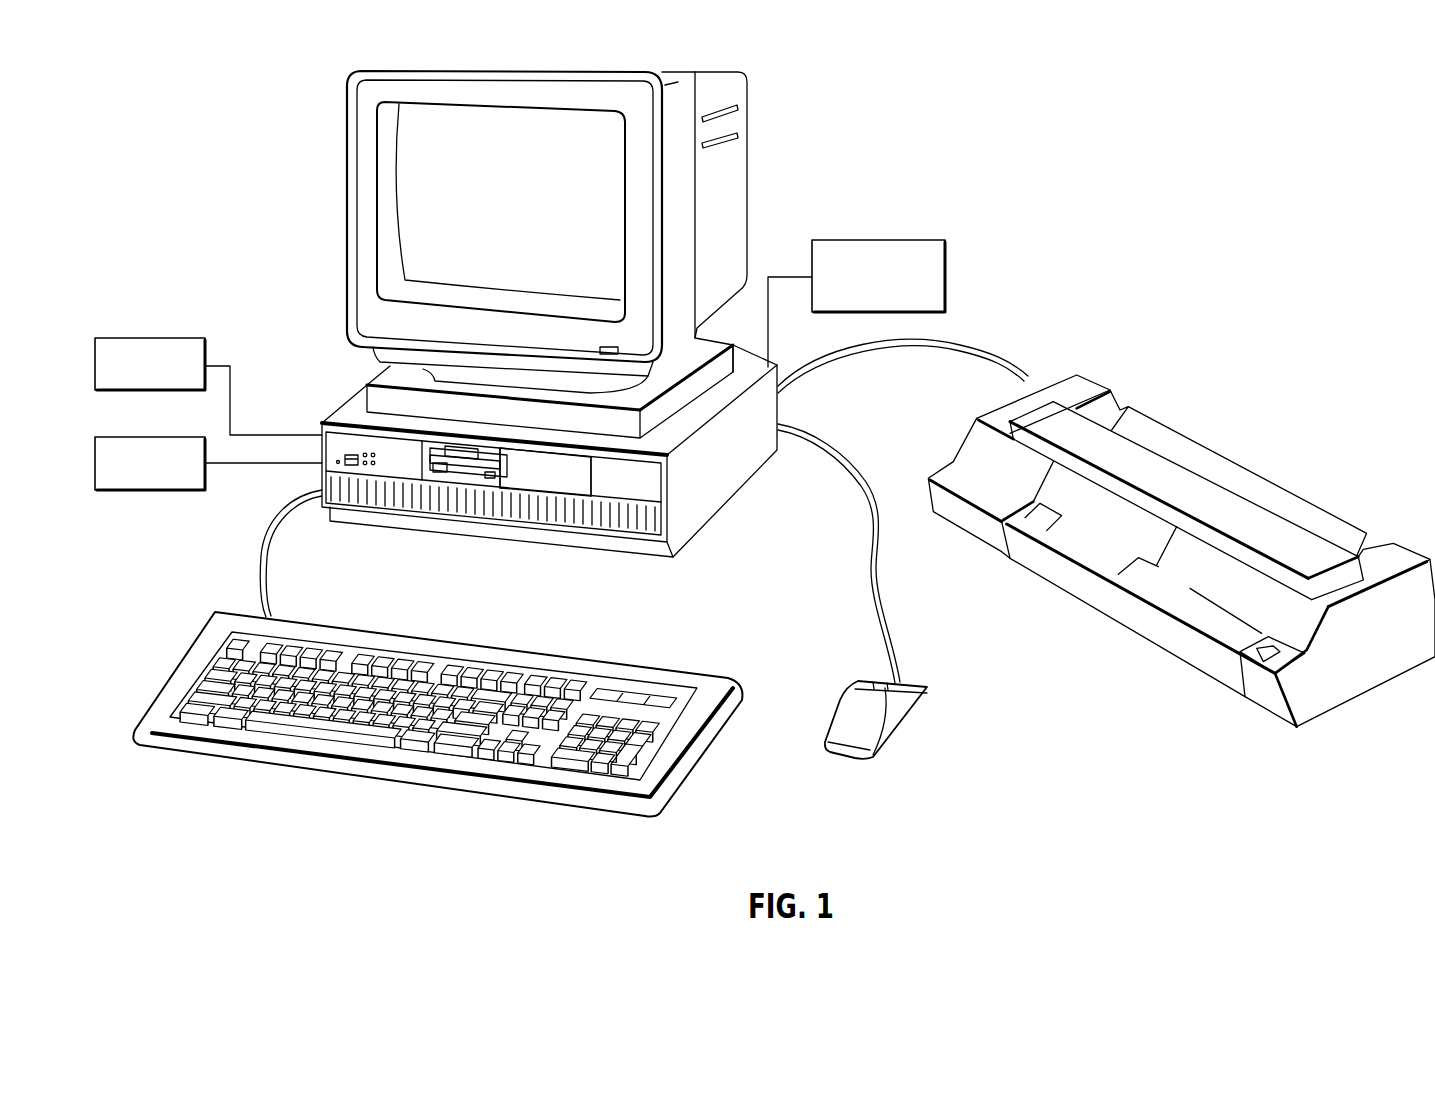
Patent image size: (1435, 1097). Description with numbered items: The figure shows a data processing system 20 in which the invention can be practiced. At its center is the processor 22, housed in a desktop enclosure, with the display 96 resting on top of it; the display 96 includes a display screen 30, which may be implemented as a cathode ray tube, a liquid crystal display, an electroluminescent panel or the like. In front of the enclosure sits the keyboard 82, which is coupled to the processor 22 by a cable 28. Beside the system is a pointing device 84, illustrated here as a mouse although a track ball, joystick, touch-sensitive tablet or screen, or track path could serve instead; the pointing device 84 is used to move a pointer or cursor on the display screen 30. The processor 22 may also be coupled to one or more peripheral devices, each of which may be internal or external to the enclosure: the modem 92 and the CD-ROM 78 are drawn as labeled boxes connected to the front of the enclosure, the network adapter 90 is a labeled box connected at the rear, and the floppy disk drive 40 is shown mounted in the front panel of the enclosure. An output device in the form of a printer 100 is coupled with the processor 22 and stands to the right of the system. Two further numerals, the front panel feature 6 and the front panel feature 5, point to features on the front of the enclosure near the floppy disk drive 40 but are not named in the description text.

The computer system 20 is at (991, 183).
The system unit 22 is at (680, 574).
The display monitor 96 is at (339, 204).
The display screen 30 is at (471, 240).
The keyboard 82 is at (374, 786).
The mouse 84 is at (905, 700).
The printer 100 is at (1109, 376).
The network adapter 90 is at (870, 240).
The modem 92 is at (153, 338).
The CD-ROM drive 78 is at (162, 490).
The keyboard cable 28 is at (258, 540).
The floppy disk drive 40 is at (462, 476).
The ventilation grille 6 is at (583, 526).
The drive bay 5 is at (601, 502).